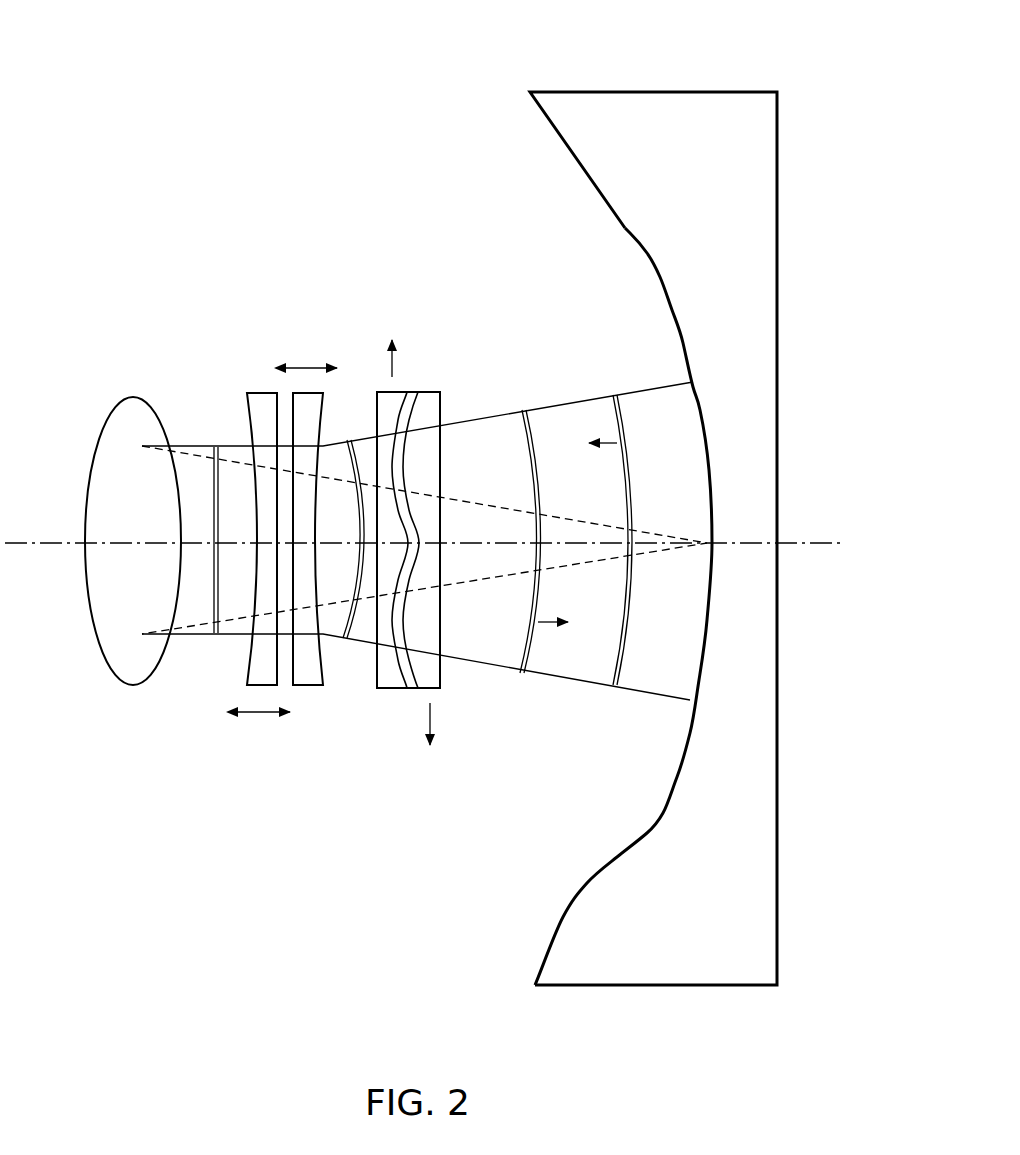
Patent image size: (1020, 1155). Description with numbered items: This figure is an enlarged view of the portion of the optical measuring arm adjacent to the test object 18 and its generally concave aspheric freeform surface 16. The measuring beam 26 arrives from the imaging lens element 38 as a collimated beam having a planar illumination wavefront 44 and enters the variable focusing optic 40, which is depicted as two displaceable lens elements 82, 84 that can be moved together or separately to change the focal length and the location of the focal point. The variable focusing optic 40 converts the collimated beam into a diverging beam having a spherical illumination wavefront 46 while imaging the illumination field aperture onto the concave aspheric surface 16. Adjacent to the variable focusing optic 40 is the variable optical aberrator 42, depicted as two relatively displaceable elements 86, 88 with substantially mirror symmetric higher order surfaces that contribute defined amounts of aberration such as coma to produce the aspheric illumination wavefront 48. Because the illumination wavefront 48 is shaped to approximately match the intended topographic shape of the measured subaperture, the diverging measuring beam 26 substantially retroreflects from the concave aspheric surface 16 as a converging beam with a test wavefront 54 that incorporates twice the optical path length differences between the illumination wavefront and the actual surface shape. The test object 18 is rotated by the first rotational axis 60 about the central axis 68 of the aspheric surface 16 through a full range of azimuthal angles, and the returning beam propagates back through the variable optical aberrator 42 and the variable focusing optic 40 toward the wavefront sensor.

The concave aspheric freeform surface 16 is at (657, 280).
The test object 18 is at (653, 498).
The measuring beam 26 is at (559, 392).
The imaging lens element 38 is at (132, 397).
The variable focusing optic 40 is at (252, 522).
The variable optical aberrator 42 is at (434, 539).
The planar illumination wavefront 44 is at (213, 585).
The spherical illumination wavefront 46 is at (353, 574).
The aspheric illumination wavefront 48 is at (530, 593).
The test wavefront 54 is at (630, 610).
The first rotational axis 60 is at (427, 598).
The central axis 68 is at (813, 543).
The displaceable lens element 82 is at (262, 418).
The displaceable lens element 84 is at (310, 686).
The relatively displaceable element 86 is at (395, 688).
The relatively displaceable element 88 is at (427, 408).